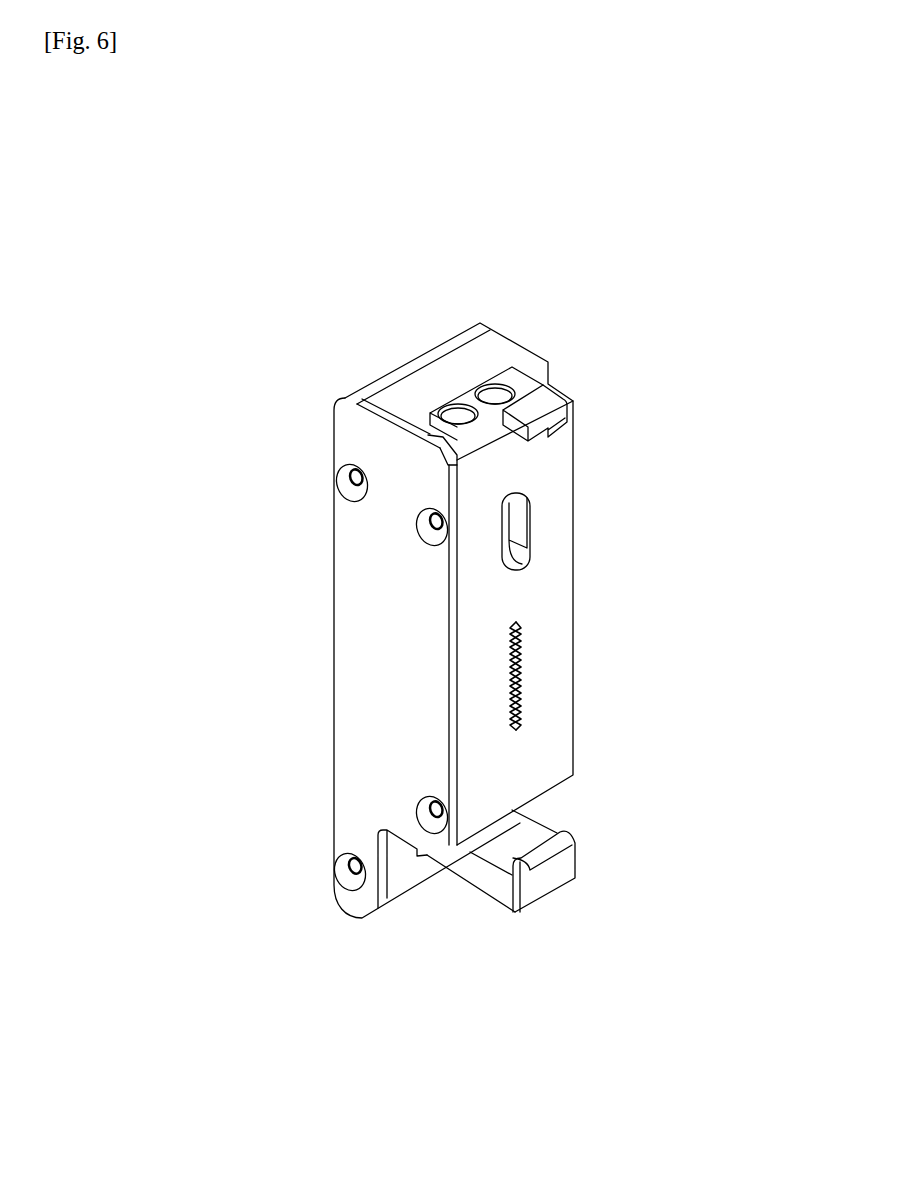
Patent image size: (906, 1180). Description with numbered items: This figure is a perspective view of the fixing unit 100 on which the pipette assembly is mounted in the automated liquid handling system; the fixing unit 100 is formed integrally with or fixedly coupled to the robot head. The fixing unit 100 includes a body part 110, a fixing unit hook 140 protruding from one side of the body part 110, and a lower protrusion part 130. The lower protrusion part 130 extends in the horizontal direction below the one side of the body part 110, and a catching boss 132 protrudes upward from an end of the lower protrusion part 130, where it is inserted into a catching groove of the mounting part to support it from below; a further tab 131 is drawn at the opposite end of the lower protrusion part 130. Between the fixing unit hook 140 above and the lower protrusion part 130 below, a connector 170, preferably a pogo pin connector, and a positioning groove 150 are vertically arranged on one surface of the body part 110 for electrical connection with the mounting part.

The fixing unit 100 is at (278, 637).
The body part 110 is at (366, 692).
The lower protrusion part 130 is at (519, 926).
The first tab 131 is at (456, 871).
The catching boss 132 is at (549, 859).
The fixing unit hook 140 is at (540, 417).
The positioning groove 150 is at (531, 520).
The connector 170 is at (526, 676).